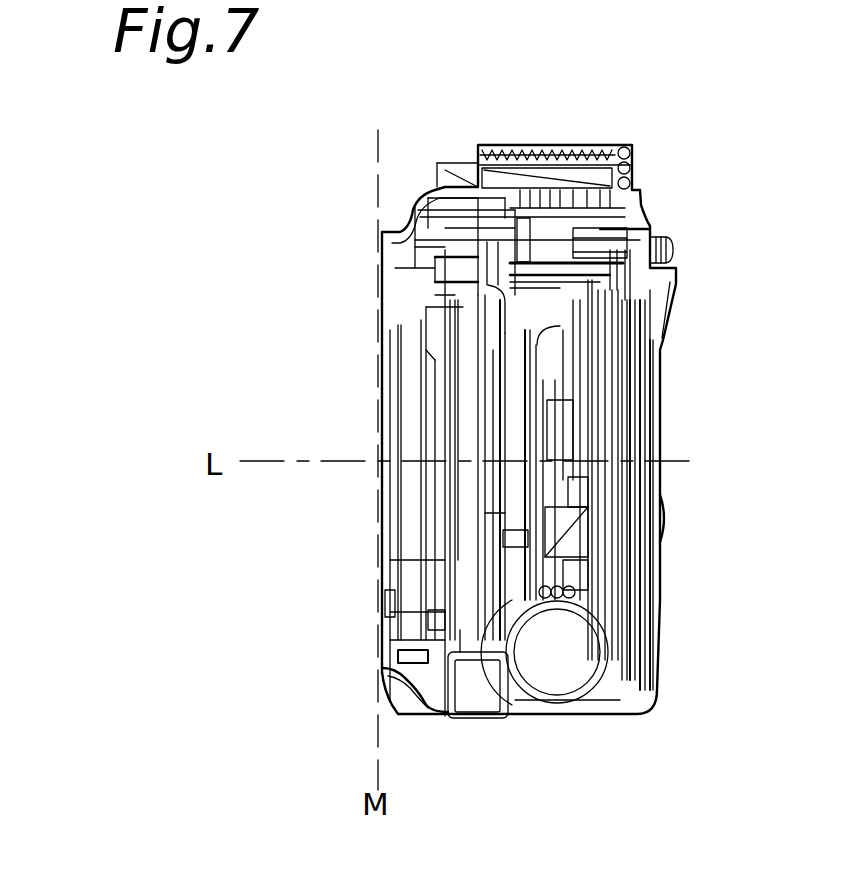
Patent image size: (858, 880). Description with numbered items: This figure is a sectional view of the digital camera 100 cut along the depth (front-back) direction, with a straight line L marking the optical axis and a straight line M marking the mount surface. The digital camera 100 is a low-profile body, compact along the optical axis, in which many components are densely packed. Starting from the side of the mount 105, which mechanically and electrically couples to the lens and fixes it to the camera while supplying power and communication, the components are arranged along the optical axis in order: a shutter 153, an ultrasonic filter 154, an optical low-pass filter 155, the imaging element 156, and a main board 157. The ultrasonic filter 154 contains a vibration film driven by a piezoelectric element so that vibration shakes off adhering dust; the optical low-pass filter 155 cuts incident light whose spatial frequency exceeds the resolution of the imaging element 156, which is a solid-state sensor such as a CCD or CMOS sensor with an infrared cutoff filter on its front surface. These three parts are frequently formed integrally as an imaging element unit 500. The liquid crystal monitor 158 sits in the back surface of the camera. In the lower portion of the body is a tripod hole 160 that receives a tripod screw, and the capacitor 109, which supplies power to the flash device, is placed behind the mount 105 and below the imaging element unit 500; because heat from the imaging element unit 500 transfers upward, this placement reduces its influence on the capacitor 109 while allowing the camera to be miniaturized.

The digital camera 100 is at (323, 717).
The mount 105 is at (380, 542).
The capacitor 109 is at (557, 653).
The shutter 153 is at (467, 363).
The ultrasonic filter 154 is at (521, 576).
The optical low-pass filter 155 is at (513, 430).
The imaging element 156 is at (528, 525).
The main board 157 is at (603, 481).
The liquid crystal monitor 158 is at (637, 369).
The tripod hole 160 is at (477, 720).
The imaging element unit 500 is at (526, 490).